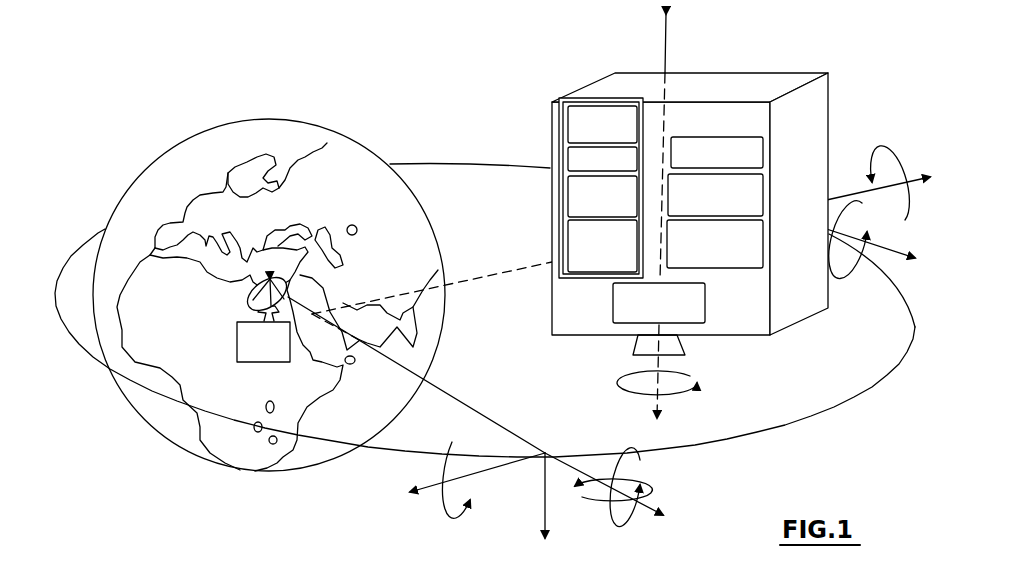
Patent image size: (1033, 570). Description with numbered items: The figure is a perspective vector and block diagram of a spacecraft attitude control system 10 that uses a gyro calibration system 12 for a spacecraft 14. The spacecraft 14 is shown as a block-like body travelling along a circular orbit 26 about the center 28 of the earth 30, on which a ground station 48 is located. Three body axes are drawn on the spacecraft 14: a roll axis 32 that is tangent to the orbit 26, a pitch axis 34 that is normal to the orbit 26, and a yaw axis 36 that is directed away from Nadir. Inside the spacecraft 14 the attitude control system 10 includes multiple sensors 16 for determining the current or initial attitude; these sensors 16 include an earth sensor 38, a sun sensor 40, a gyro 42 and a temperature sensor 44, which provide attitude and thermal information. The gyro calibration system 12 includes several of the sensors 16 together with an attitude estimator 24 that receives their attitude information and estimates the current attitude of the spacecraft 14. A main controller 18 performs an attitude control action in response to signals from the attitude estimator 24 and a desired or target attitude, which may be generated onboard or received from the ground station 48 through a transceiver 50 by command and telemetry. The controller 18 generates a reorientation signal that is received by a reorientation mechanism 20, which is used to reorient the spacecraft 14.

The spacecraft attitude control system 10 is at (666, 216).
The gyro calibration system 12 is at (672, 120).
The spacecraft 14 is at (788, 73).
The sensors 16 is at (573, 184).
The main controller 18 is at (763, 192).
The reorientation mechanism 20 is at (705, 298).
The attitude estimator 24 is at (763, 241).
The circular orbit 26 is at (445, 165).
The center of the earth 28 is at (306, 302).
The earth 30 is at (265, 120).
The roll axis 32 is at (893, 248).
The pitch axis 34 is at (667, 60).
The yaw axis 36 is at (908, 190).
The earth sensor 38 is at (563, 126).
The sun sensor 40 is at (563, 190).
The gyro 42 is at (563, 158).
The temperature sensor 44 is at (563, 237).
The ground station 48 is at (237, 351).
The transceiver 50 is at (735, 137).